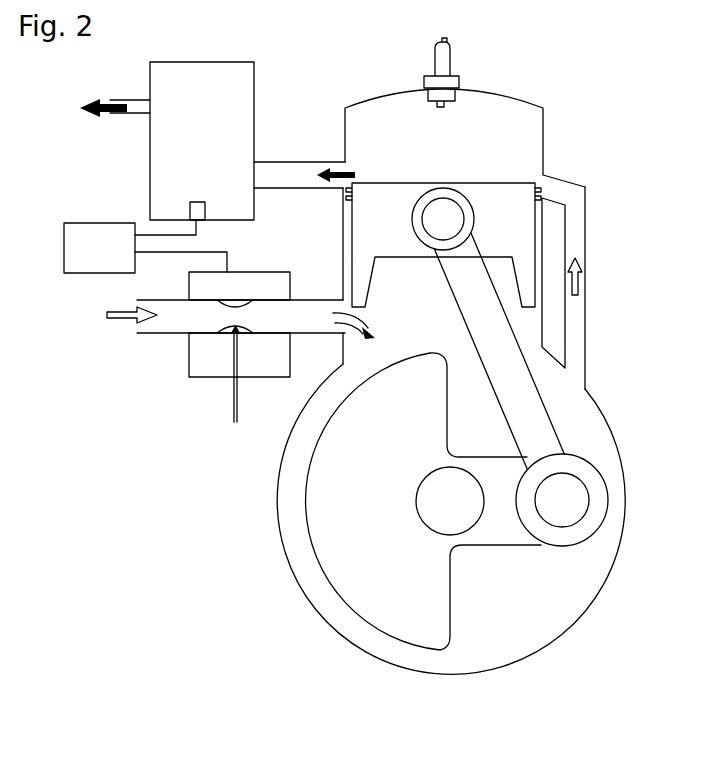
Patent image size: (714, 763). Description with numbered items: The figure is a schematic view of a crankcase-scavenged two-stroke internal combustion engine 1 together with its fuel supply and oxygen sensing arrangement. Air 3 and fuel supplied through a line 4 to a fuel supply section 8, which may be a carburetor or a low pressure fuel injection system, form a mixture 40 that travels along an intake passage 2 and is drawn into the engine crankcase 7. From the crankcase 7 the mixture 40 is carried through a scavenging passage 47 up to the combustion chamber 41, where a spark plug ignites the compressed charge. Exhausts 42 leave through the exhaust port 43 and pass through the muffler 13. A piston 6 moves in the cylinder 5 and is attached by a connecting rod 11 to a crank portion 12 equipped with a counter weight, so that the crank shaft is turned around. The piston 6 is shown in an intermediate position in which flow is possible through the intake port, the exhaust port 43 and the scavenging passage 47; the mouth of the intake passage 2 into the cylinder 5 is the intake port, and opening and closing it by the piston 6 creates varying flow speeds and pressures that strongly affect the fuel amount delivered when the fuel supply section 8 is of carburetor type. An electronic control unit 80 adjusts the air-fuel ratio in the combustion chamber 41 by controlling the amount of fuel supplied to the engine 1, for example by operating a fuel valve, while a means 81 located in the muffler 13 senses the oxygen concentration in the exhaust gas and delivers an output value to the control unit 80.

The internal combustion engine 1 is at (517, 82).
The intake passage 2 is at (181, 325).
The air 3 is at (112, 317).
The line 4 is at (233, 388).
The cylinder 5 is at (503, 263).
The piston 6 is at (443, 245).
The crankcase 7 is at (451, 519).
The fuel supply section 8 is at (239, 351).
The connecting rod 11 is at (521, 389).
The crank portion 12 is at (423, 501).
The muffler 13 is at (167, 141).
The mixture 40 is at (583, 283).
The combustion chamber 41 is at (441, 91).
The exhausts 42 is at (352, 170).
The exhaust port 43 is at (312, 173).
The scavenging passage 47 is at (577, 240).
The electronic control unit 80 is at (82, 233).
The means for sensing oxygen concentration 81 is at (205, 204).